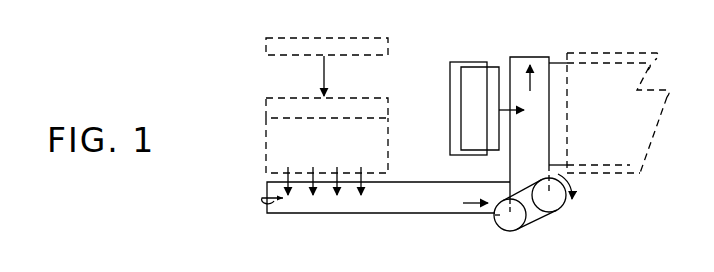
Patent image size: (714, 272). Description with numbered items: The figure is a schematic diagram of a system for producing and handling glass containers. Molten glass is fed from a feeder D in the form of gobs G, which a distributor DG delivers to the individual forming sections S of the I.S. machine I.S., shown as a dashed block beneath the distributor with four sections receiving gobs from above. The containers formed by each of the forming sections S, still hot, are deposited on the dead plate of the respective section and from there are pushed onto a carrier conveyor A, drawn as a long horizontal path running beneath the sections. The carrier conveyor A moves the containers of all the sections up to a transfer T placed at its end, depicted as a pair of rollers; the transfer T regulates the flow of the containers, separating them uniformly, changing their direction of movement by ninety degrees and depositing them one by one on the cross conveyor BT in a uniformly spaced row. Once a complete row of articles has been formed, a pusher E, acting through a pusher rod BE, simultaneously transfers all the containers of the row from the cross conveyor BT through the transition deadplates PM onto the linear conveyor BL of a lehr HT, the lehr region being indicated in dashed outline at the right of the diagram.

The feeder D is at (327, 46).
The gobs G is at (331, 76).
The distributor DG is at (327, 108).
The I.S. machine I.S. is at (327, 145).
The forming sections S is at (324, 175).
The carrier conveyor A is at (386, 197).
The pusher E is at (468, 92).
The pusher rod BE is at (492, 89).
The cross conveyor BT is at (538, 108).
The transition deadplates PM is at (612, 102).
The linear conveyor BL is at (639, 58).
The lehr HT is at (657, 96).
The transfer T is at (556, 212).